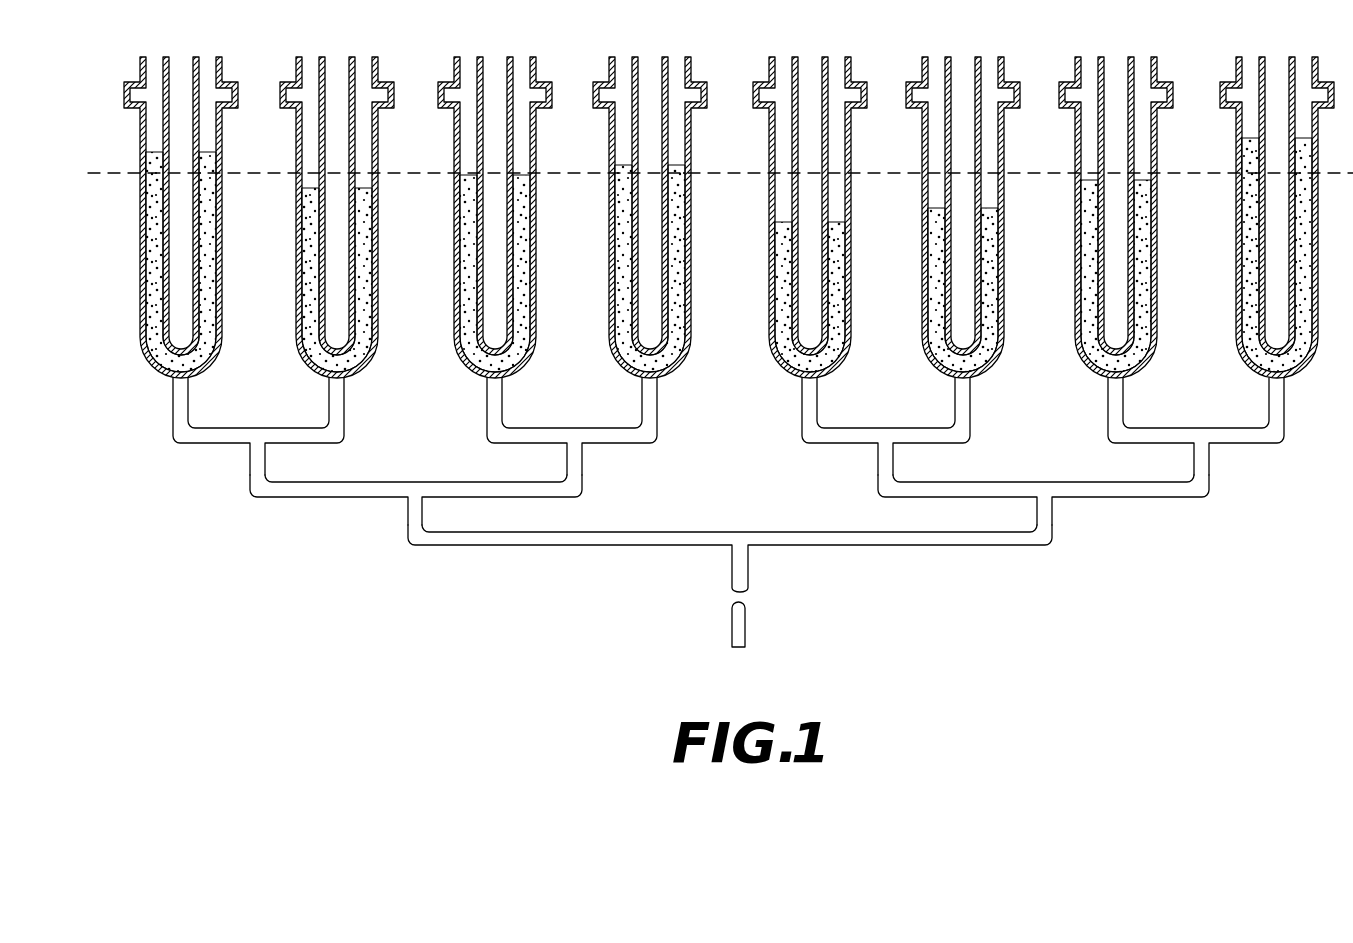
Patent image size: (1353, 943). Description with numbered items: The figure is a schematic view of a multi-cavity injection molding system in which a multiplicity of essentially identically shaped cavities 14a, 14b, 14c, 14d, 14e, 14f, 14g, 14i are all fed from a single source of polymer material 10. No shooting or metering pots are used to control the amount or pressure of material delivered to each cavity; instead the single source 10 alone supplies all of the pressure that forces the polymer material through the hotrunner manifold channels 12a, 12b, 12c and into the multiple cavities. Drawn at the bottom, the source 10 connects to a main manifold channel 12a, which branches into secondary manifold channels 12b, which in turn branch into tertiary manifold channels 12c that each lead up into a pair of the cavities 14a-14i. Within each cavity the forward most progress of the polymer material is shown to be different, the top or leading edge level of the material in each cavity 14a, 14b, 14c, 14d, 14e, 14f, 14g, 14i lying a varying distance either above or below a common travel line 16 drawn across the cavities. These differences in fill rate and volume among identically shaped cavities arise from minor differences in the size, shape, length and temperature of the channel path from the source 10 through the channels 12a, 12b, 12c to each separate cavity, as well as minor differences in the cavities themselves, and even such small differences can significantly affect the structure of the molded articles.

The source of polymer material 10 is at (752, 630).
The manifold channel 12a is at (880, 545).
The manifold channel 12b is at (310, 497).
The manifold channel 12c is at (193, 443).
The cavity 14a is at (1261, 372).
The cavity 14b is at (1100, 372).
The cavity 14c is at (947, 372).
The cavity 14d is at (794, 372).
The cavity 14e is at (634, 372).
The cavity 14f is at (479, 372).
The cavity 14g is at (321, 372).
The cavity 14i is at (165, 372).
The travel line 16 is at (130, 172).